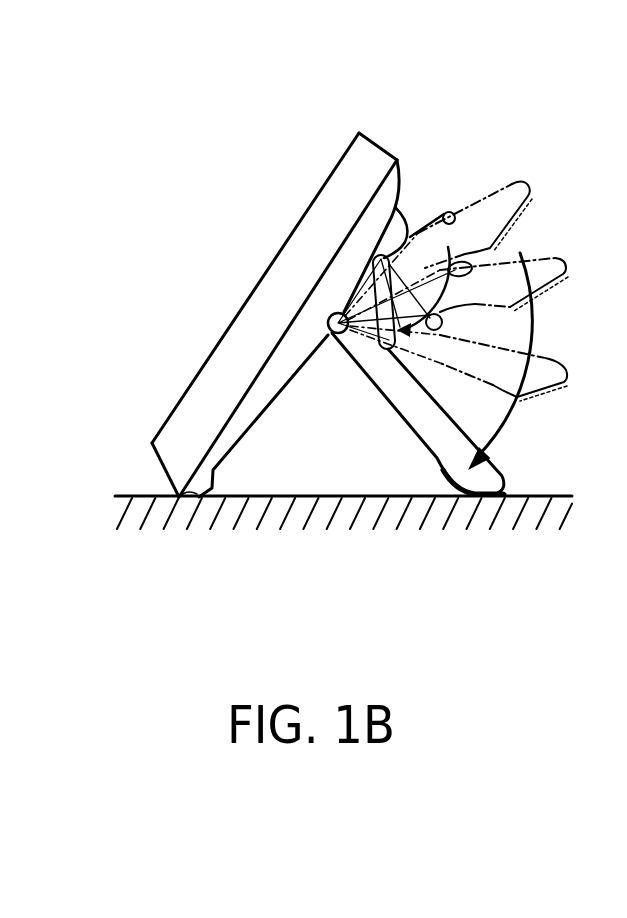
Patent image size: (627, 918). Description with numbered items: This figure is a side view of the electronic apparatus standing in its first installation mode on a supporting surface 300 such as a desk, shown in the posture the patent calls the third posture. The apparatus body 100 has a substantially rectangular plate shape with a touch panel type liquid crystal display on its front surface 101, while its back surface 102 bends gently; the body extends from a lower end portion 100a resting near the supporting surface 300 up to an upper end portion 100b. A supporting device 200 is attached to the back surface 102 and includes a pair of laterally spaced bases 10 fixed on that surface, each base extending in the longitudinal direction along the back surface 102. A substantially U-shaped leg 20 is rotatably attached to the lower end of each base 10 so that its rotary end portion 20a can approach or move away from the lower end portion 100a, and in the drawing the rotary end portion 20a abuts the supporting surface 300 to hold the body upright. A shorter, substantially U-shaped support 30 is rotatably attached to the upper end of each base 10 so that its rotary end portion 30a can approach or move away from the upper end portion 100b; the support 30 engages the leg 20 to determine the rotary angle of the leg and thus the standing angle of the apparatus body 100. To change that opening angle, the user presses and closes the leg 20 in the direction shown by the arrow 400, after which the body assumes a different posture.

The apparatus body 100 is at (259, 272).
The lower end portion of the apparatus body 100a is at (175, 460).
The upper end portion of the apparatus body 100b is at (368, 158).
The base 10 is at (330, 212).
The front surface 101 is at (262, 277).
The back surface 102 is at (253, 425).
The supporting device 200 is at (430, 348).
The support 30 is at (422, 236).
The rotary end portion of the support 30a is at (448, 222).
The leg 20 is at (450, 348).
The rotary end portion of the leg 20a is at (488, 482).
The supporting surface 300 is at (532, 493).
The arrow 400 is at (512, 433).